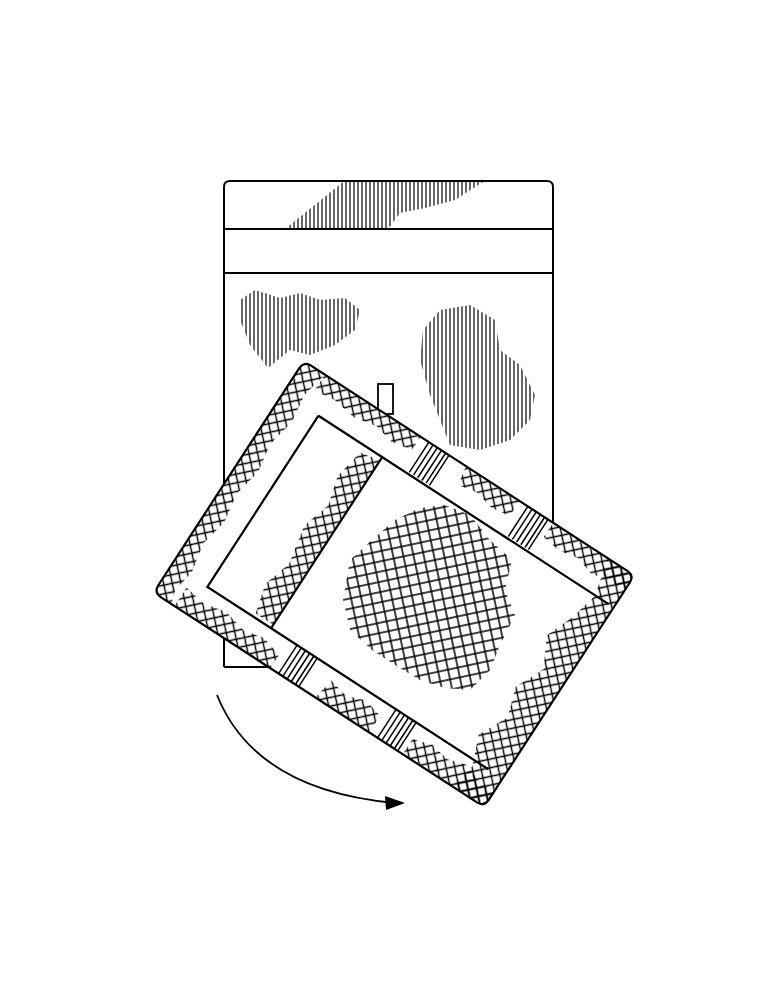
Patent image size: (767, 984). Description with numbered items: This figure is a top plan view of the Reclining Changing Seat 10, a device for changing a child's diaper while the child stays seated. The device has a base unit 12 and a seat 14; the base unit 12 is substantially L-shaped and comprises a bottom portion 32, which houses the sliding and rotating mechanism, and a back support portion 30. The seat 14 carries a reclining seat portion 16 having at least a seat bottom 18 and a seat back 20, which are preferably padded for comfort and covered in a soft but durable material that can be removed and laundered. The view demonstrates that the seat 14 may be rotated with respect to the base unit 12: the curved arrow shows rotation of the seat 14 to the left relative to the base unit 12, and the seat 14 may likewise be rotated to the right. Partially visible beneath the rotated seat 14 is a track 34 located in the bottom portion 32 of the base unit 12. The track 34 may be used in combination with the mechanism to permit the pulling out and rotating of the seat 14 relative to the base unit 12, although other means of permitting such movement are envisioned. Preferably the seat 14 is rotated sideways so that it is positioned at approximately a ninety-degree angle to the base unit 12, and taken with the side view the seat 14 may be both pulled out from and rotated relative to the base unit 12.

The Reclining Changing Seat 10 is at (235, 82).
The base unit 12 is at (553, 263).
The seat 14 is at (570, 563).
The reclining seat portion 16 is at (317, 628).
The seat bottom 18 is at (512, 705).
The seat back 20 is at (298, 493).
The back support portion 30 is at (545, 203).
The bottom portion 32 is at (240, 310).
The track 34 is at (387, 382).